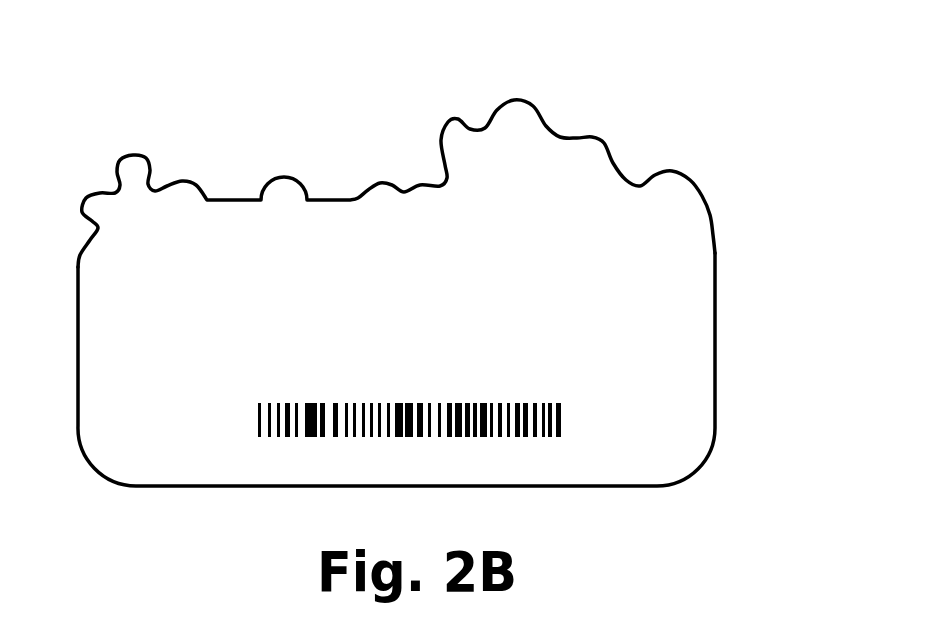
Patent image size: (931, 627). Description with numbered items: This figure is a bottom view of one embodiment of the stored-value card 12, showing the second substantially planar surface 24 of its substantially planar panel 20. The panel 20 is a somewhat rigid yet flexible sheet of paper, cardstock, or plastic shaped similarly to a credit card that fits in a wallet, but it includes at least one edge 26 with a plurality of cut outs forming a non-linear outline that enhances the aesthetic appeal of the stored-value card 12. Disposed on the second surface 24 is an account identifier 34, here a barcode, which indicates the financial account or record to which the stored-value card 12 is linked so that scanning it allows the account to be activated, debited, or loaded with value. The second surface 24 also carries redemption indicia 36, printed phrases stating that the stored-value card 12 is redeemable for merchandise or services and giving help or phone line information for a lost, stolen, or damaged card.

The stored-value card 12 is at (628, 93).
The substantially planar panel 20 is at (715, 347).
The second substantially planar surface 24 is at (679, 416).
The edge 26 is at (537, 100).
The account identifier 34 is at (560, 420).
The redemption indicia 36 is at (650, 297).